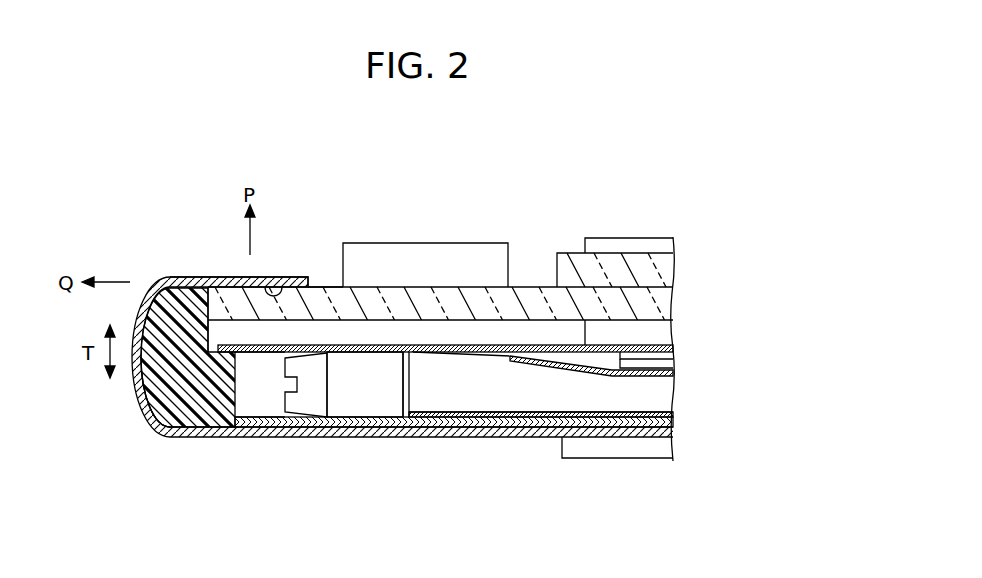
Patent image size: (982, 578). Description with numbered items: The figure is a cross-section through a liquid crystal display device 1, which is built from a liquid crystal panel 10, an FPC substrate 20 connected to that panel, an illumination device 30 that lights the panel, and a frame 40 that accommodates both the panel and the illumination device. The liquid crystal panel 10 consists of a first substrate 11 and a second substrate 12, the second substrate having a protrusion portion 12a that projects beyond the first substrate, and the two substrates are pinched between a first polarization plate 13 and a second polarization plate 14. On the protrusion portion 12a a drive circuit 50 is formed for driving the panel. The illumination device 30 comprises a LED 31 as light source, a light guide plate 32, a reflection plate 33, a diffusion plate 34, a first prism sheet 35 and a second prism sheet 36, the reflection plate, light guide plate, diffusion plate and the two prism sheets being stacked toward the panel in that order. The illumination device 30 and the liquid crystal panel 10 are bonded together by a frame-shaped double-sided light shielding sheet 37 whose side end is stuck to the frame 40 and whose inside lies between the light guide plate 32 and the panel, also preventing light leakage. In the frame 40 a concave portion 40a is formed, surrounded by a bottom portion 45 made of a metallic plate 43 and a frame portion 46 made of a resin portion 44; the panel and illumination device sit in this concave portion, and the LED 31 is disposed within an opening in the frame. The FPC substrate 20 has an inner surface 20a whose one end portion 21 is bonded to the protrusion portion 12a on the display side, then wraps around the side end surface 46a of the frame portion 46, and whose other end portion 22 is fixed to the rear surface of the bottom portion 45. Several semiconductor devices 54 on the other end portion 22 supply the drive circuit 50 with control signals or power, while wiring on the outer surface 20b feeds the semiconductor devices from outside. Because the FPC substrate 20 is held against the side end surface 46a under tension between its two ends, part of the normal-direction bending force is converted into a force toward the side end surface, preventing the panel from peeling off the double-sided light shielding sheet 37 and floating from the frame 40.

The liquid crystal display device 1 is at (618, 163).
The liquid crystal panel 10 is at (558, 237).
The first substrate 11 is at (673, 272).
The second substrate 12 is at (673, 300).
The protrusion portion 12a is at (327, 287).
The first polarization plate 13 is at (675, 243).
The second polarization plate 14 is at (670, 333).
The FPC substrate 20 is at (143, 317).
The inner surface 20a is at (277, 292).
The outer surface 20b is at (460, 433).
The one end portion 21 is at (212, 278).
The other end portion 22 is at (404, 433).
The illumination device 30 is at (783, 442).
The LED 31 is at (353, 405).
The light guide plate 32 is at (665, 392).
The reflection plate 33 is at (673, 417).
The diffusion plate 34 is at (673, 375).
The first prism sheet 35 is at (673, 367).
The second prism sheet 36 is at (675, 353).
The double-sided light shielding sheet 37 is at (673, 347).
The frame 40 is at (221, 428).
The concave portion 40a is at (262, 405).
The metallic plate 43 is at (454, 472).
The resin portion 44 is at (186, 392).
The bottom portion 45 is at (513, 421).
The frame portion 46 is at (172, 403).
The side end surface 46a is at (135, 388).
The drive circuit 50 is at (413, 257).
The semiconductor device 54 is at (633, 453).